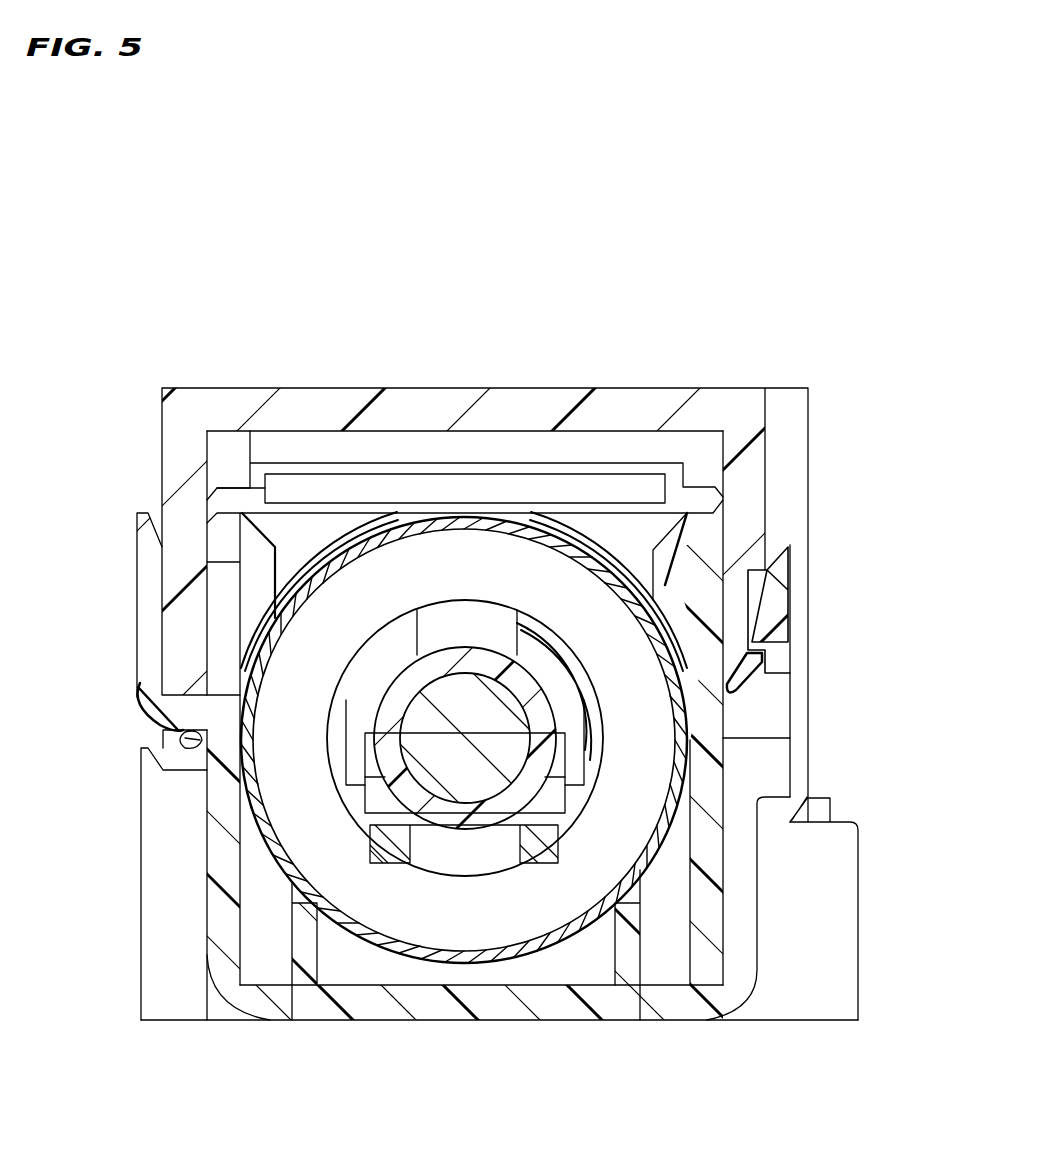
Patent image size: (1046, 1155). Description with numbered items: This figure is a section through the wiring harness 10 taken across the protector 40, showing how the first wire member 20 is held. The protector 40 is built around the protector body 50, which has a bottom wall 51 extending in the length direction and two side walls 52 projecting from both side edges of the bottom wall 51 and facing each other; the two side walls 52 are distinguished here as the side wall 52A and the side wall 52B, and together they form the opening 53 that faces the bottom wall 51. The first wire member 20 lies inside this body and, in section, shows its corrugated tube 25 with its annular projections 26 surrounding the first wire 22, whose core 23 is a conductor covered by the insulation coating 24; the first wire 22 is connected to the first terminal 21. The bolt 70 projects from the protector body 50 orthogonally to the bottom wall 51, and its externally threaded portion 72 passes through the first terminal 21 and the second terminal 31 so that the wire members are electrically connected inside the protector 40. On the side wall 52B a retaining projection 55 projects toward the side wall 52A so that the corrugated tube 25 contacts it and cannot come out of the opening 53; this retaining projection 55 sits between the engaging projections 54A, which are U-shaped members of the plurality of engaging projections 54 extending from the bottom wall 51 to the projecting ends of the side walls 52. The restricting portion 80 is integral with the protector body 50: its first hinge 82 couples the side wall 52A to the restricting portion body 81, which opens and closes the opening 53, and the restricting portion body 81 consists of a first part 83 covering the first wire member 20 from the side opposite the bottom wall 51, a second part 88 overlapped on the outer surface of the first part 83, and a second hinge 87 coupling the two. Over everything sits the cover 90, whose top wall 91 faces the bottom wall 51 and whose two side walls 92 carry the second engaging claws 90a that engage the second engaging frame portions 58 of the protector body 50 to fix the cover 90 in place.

The wiring harness 10 is at (728, 192).
The protector 40 is at (754, 323).
The opening 53 is at (283, 555).
The restricting portion body 81 is at (305, 560).
The first part 83 is at (366, 470).
The second hinge 87 is at (402, 487).
The second part 88 is at (452, 500).
The restricting portion 80 is at (465, 418).
The top wall 91 is at (607, 400).
The cover 90 is at (688, 385).
The side walls 92 is at (172, 432).
The engaging projections 54A is at (253, 545).
The engaging projections 54 is at (391, 708).
The second engaging frame portions 58 is at (150, 600).
The second engaging claws 90a is at (178, 650).
The first hinge 82 is at (180, 740).
The side wall 52A is at (215, 793).
The side walls 52 is at (523, 690).
The side wall 52B is at (716, 745).
The retaining projection 55 is at (655, 585).
The externally threaded portion 72 is at (466, 620).
The bolt 70 is at (465, 717).
The second terminal 31 is at (563, 740).
The first terminal 21 is at (572, 800).
The first wire 22 is at (400, 812).
The core 23 is at (453, 770).
The insulation coating 24 is at (482, 812).
The annular projections 26 is at (366, 930).
The corrugated tube 25 is at (402, 930).
The first wire member 20 is at (464, 799).
The bottom wall 51 is at (568, 1012).
The protector body 50 is at (523, 712).